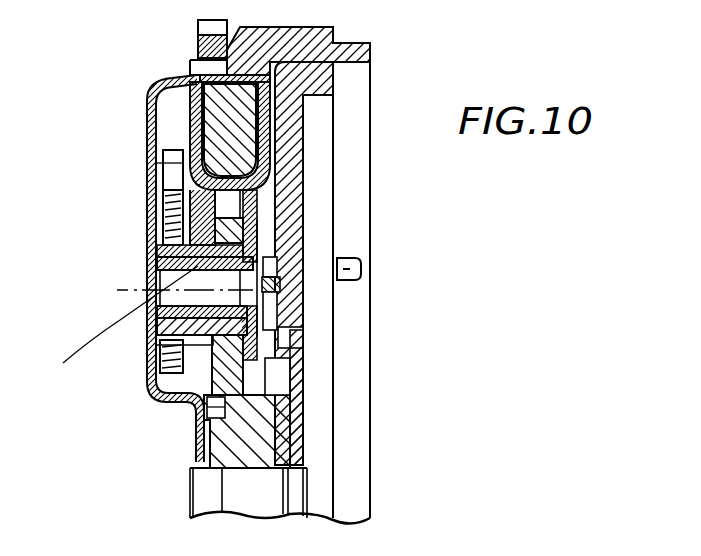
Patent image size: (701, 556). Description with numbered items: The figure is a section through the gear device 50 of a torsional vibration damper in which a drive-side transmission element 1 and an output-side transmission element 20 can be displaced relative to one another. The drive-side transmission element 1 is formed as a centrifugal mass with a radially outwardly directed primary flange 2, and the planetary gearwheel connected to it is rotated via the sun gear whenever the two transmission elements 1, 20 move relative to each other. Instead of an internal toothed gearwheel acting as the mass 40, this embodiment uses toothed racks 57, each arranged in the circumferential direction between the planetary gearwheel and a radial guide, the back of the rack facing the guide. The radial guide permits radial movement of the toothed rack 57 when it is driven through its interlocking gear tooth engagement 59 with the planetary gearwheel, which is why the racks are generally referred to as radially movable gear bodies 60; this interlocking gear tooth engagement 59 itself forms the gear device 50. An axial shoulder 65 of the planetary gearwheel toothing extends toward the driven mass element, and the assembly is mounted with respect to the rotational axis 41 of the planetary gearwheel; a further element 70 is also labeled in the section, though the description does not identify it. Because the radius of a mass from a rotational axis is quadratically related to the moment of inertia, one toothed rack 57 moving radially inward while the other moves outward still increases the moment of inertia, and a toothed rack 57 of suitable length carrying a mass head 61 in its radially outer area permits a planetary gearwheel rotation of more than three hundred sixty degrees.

The drive-side transmission element 1 is at (159, 84).
The primary flange 2 is at (150, 105).
The output-side transmission element 20 is at (334, 80).
The mass 40 is at (166, 166).
The rotational axis 41 is at (177, 367).
The gear device 50 is at (153, 299).
The toothed rack 57 is at (158, 360).
The interlocking gear tooth engagement 59 is at (186, 242).
The radially movable gear body 60 is at (166, 195).
The mass head 61 is at (165, 150).
The axial shoulder 65 is at (162, 262).
The inner housing 70 is at (262, 242).